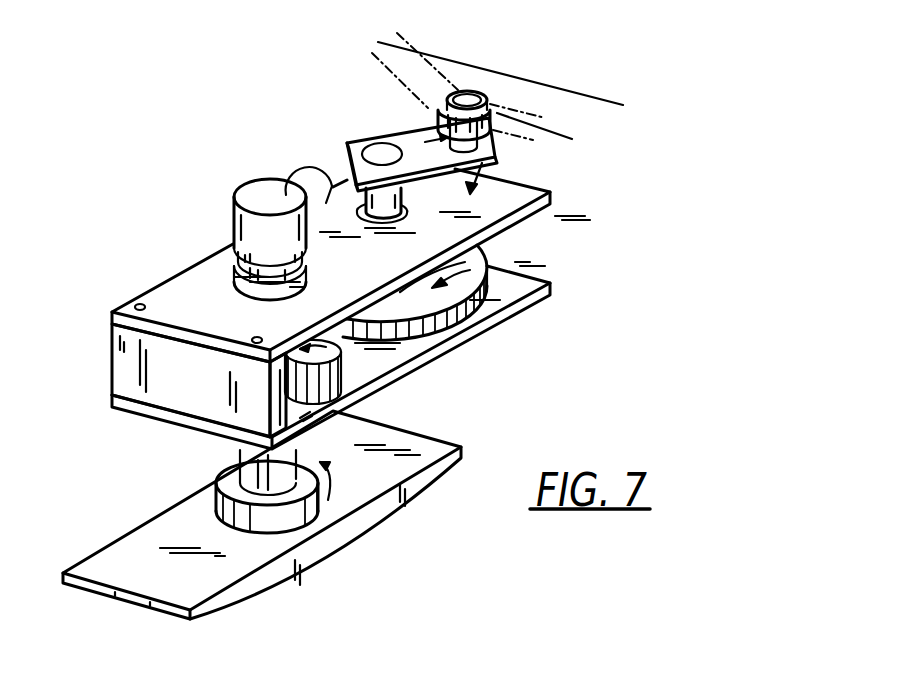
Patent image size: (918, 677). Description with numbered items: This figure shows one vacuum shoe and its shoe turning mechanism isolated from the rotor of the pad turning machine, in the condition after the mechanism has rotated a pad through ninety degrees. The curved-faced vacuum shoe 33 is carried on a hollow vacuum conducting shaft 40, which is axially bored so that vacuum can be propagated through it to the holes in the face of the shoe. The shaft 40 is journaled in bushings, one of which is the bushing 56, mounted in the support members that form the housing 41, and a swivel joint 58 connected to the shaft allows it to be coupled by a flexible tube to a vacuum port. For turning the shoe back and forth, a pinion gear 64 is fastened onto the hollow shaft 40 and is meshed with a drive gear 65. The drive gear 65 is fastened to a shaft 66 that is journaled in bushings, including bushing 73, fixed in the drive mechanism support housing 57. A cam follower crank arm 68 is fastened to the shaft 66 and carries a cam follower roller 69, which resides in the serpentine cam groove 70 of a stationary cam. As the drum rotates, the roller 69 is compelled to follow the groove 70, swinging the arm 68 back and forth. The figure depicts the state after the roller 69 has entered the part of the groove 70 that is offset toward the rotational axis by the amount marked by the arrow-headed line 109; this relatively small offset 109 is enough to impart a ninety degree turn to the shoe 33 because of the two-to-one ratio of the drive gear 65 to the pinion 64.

The vacuum shoe 33 is at (437, 445).
The hollow vacuum conducting shaft 40 is at (240, 450).
The housing 41 is at (118, 416).
The bushing 56 is at (237, 273).
The drive mechanism support housing 57 is at (523, 187).
The swivel joint 58 is at (232, 203).
The pinion gear 64 is at (397, 368).
The drive gear 65 is at (512, 245).
The shaft 66 is at (407, 200).
The cam follower crank arm 68 is at (352, 143).
The cam follower roller 69 is at (470, 96).
The cam groove 70 is at (408, 84).
The bushing 73 is at (352, 202).
The offset 109 is at (564, 132).